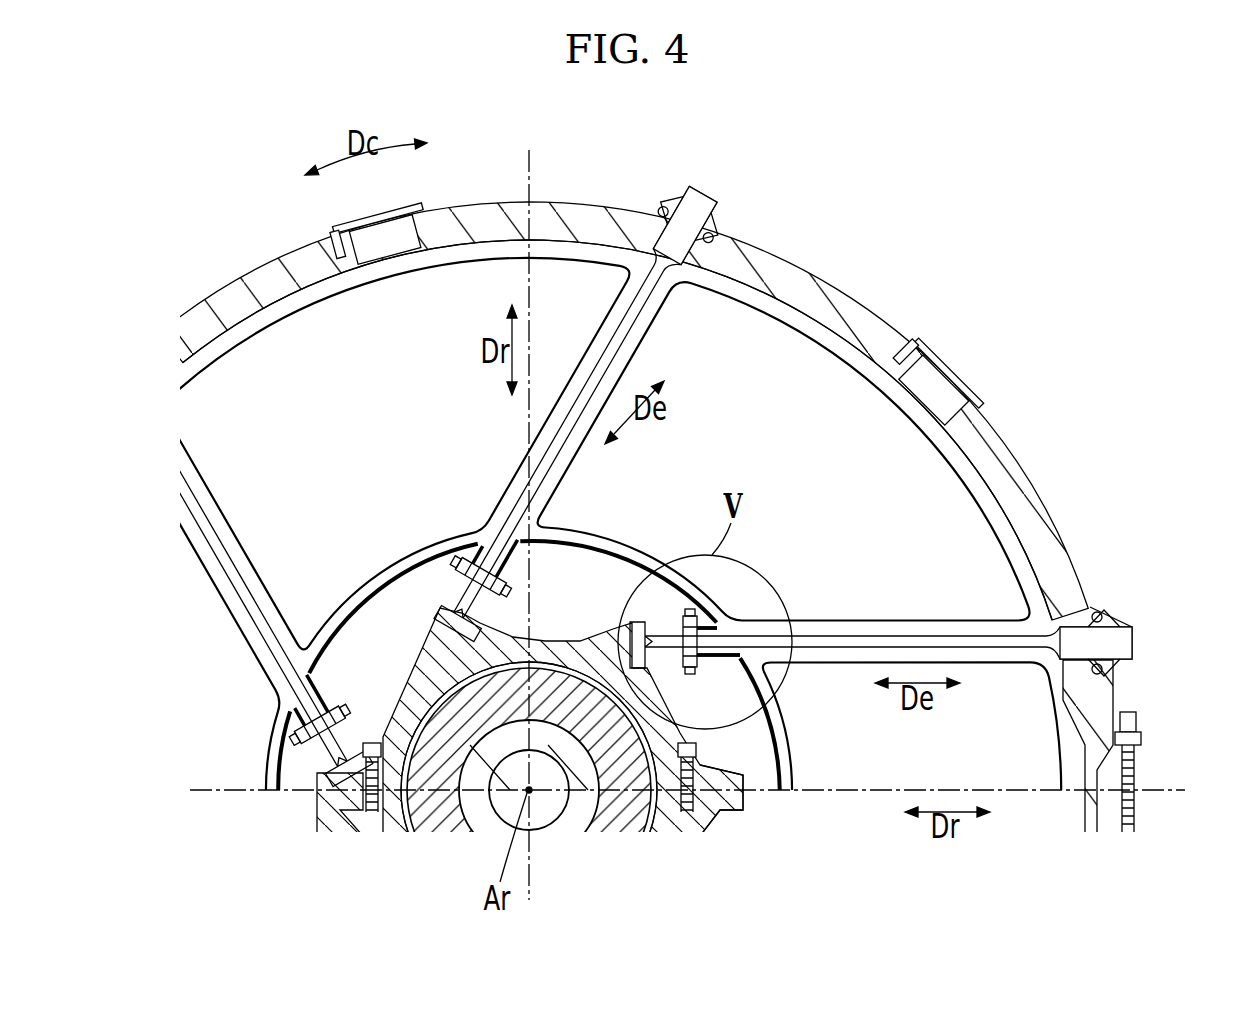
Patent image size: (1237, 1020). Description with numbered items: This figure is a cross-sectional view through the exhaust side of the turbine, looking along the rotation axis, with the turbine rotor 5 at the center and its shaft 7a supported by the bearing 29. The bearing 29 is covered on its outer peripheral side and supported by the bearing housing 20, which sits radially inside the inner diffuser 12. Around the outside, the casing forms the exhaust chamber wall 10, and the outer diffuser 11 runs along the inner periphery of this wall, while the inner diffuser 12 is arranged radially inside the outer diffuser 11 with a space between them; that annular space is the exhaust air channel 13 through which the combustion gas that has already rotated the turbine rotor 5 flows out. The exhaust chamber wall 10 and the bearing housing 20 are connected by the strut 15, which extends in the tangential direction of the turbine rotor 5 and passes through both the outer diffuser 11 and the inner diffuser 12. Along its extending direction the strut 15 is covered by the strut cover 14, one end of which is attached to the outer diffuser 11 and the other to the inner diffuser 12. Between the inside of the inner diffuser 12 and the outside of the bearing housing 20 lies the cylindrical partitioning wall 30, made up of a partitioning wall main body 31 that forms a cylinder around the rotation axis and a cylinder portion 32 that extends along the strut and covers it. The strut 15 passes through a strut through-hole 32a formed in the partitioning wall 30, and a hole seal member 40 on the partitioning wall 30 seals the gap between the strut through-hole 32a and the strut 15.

The turbine rotor 5 is at (583, 800).
The rotor shaft 7a is at (548, 812).
The exhaust chamber wall 10 is at (858, 322).
The outer diffuser 11 is at (253, 337).
The inner diffuser 12 is at (641, 570).
The exhaust air channel 13 is at (462, 308).
The strut cover 14 is at (592, 335).
The strut 15 is at (641, 268).
The bearing housing 20 is at (660, 778).
The bearing 29 is at (440, 822).
The partitioning wall 30 is at (708, 580).
The partitioning wall main body 31 is at (708, 580).
The cylinder portion 32 is at (498, 548).
The strut through-hole 32a is at (733, 630).
The hole seal member 40 is at (470, 572).